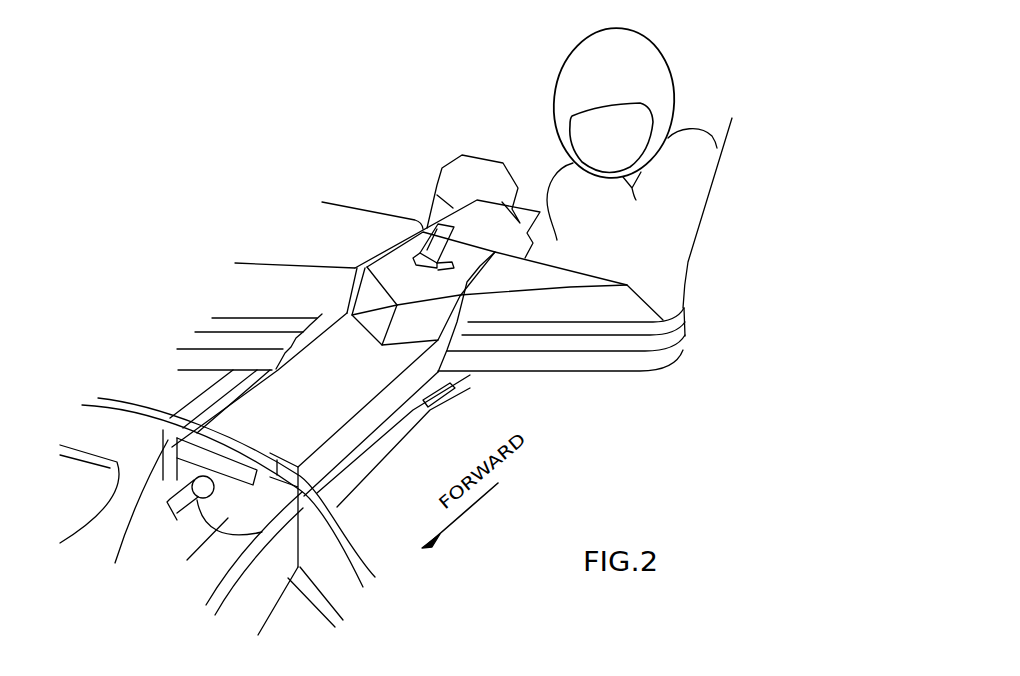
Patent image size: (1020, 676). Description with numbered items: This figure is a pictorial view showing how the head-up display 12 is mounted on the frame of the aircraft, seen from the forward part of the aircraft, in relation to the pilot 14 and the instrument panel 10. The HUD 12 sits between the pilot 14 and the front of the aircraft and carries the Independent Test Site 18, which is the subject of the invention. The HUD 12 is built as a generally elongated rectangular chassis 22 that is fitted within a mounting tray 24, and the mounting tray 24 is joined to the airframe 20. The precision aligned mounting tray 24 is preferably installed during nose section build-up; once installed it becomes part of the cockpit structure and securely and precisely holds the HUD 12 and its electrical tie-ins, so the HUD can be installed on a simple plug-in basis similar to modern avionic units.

The instrument panel 10 is at (333, 228).
The head-up display 12 is at (437, 146).
The pilot 14 is at (575, 62).
The Independent Test Site 18 is at (430, 228).
The airframe 20 is at (120, 410).
The chassis 22 is at (335, 405).
The mounting tray 24 is at (222, 438).